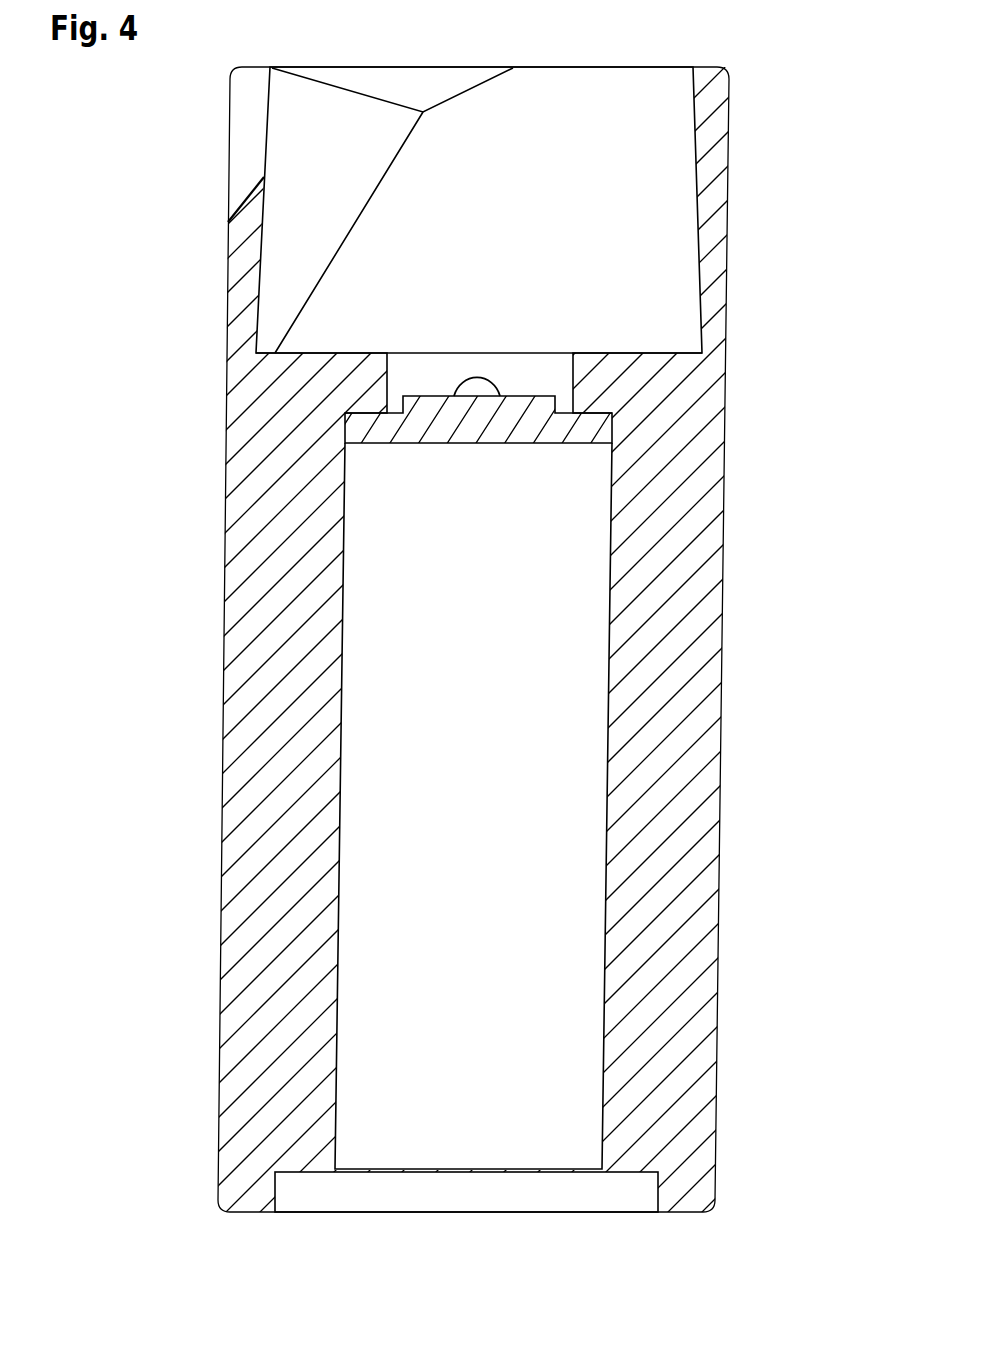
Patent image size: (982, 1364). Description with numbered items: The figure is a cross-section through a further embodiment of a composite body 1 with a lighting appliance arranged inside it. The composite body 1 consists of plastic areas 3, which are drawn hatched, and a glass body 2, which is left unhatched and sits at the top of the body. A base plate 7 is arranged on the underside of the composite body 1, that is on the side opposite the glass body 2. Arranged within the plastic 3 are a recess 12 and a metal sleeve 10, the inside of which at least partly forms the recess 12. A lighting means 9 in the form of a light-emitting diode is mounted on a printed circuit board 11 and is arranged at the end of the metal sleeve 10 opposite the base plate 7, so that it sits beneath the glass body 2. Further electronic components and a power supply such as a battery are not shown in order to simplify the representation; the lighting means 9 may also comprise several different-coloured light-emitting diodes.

The composite body 1 is at (160, 823).
The glass body 2 is at (647, 259).
The plastic area 3 is at (240, 632).
The base plate 7 is at (308, 1198).
The lighting means 9 is at (456, 394).
The metal sleeve 10 is at (580, 1128).
The printed circuit board 11 is at (527, 425).
The recess 12 is at (547, 381).